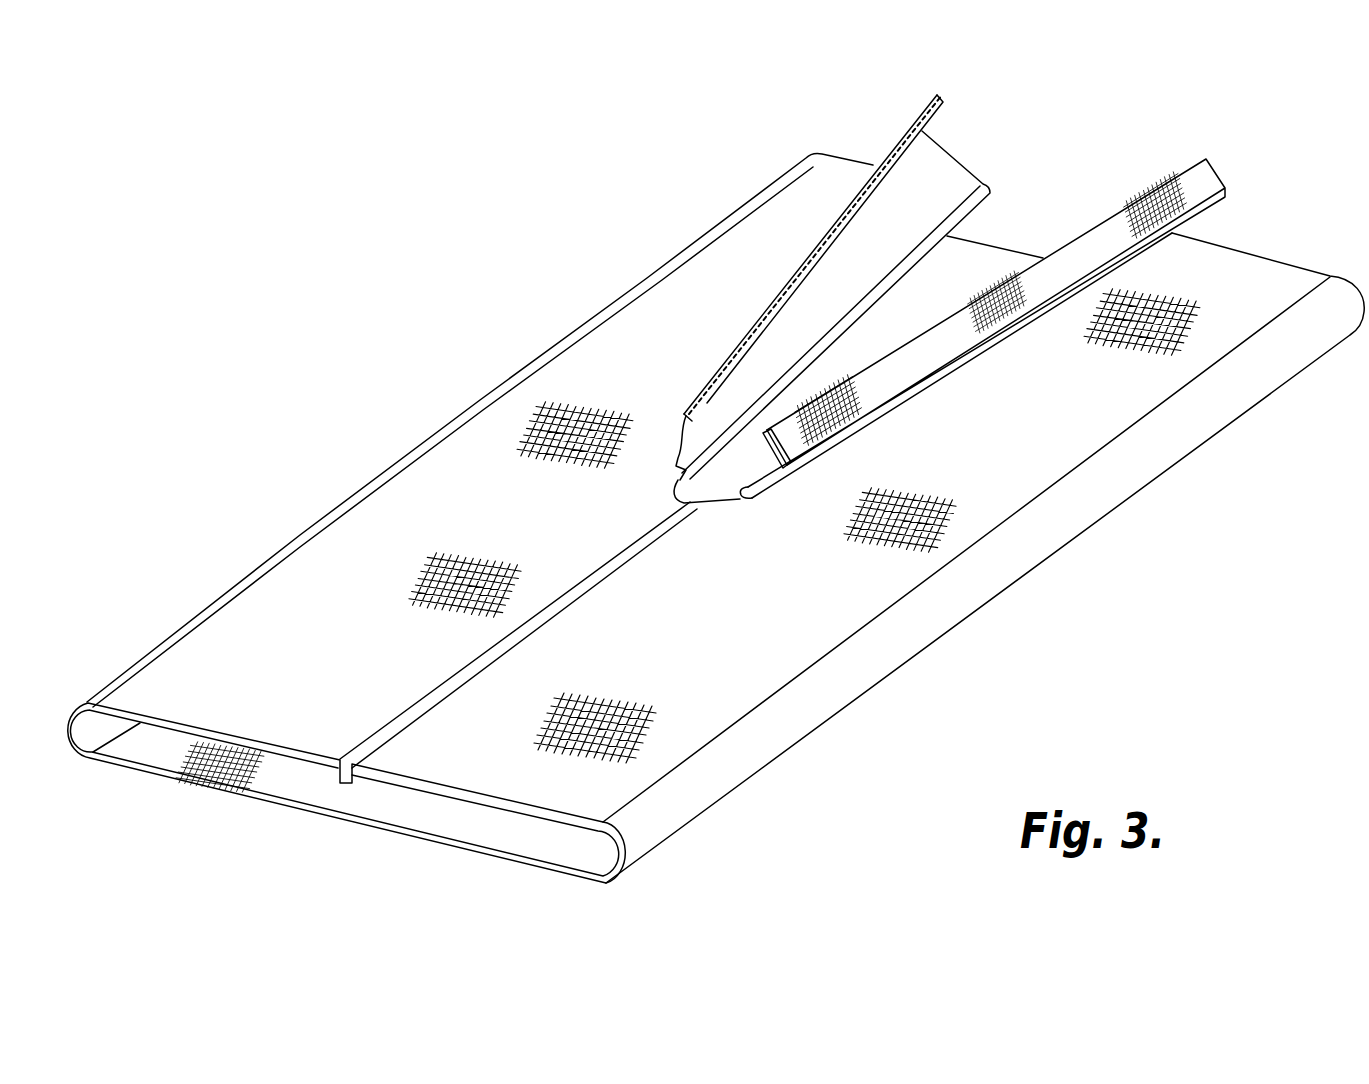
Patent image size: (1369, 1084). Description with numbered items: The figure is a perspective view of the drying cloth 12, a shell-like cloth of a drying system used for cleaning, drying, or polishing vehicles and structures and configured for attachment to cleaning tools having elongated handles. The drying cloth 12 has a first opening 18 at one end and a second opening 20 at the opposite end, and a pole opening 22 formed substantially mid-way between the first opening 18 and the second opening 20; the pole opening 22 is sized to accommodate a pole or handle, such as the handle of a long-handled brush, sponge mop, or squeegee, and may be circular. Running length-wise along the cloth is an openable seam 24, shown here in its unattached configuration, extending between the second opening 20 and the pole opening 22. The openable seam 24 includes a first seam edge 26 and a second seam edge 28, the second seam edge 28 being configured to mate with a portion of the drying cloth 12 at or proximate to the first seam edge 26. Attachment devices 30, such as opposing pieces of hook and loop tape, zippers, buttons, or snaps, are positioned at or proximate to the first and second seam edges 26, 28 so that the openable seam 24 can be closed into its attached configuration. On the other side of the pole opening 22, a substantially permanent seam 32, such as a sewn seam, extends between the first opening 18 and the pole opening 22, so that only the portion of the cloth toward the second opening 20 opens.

The drying cloth 12 is at (658, 212).
The first opening 18 is at (482, 824).
The second opening 20 is at (1001, 230).
The pole opening 22 is at (728, 503).
The openable seam 24 is at (720, 339).
The first seam edge 26 is at (894, 143).
The second seam edge 28 is at (998, 301).
The attachment devices 30 is at (1158, 197).
The permanent seam 32 is at (582, 598).